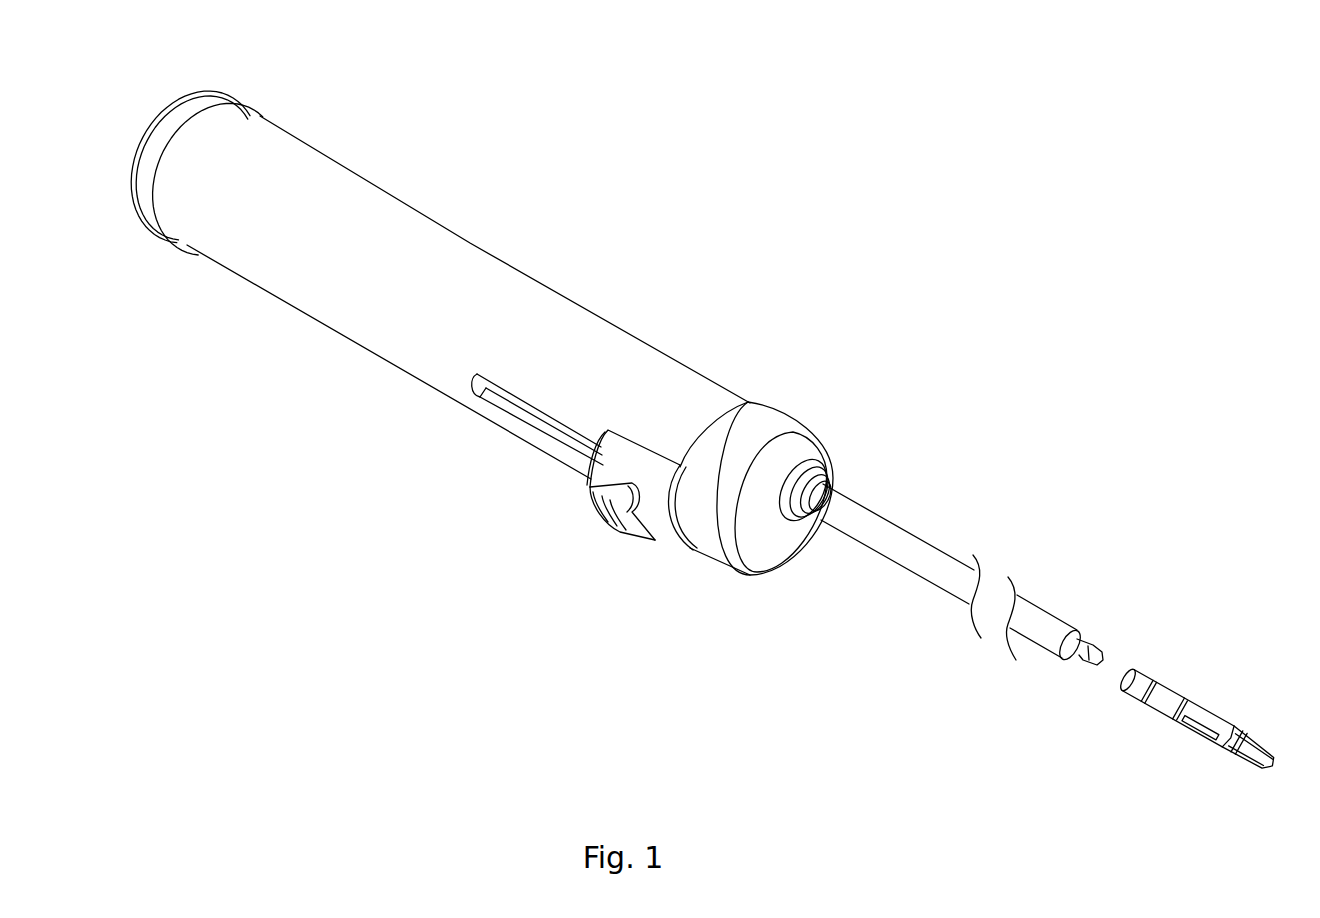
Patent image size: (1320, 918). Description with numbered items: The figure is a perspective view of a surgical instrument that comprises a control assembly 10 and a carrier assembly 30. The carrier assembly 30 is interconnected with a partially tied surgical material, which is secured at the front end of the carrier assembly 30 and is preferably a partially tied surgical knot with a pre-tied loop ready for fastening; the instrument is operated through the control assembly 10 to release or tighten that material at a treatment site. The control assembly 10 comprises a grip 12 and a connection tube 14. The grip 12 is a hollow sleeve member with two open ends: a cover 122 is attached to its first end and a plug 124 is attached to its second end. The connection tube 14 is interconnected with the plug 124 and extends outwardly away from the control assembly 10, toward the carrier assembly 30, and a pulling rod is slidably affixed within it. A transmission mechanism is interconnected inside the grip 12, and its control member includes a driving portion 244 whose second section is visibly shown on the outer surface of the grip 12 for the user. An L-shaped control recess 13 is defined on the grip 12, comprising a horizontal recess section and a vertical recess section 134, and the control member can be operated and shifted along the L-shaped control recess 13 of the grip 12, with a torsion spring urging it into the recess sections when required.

The control assembly 10 is at (617, 357).
The grip 12 is at (427, 262).
The cover 122 is at (210, 103).
The plug 124 is at (800, 457).
The L-shaped control recess 13 is at (557, 451).
The vertical recess section 134 is at (520, 403).
The driving portion 244 is at (613, 522).
The connection tube 14 is at (910, 555).
The carrier assembly 30 is at (1178, 739).